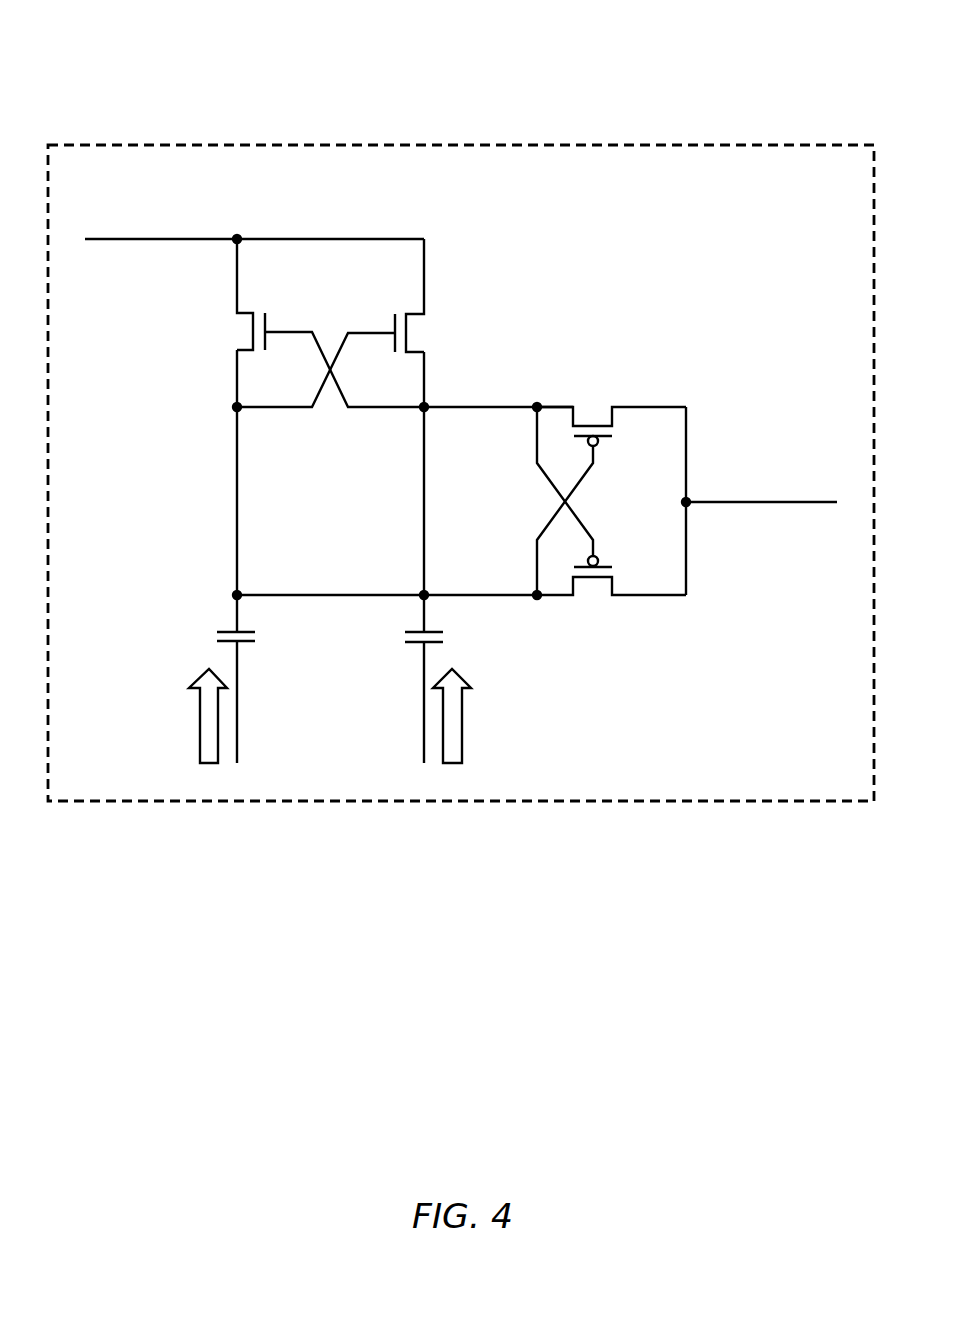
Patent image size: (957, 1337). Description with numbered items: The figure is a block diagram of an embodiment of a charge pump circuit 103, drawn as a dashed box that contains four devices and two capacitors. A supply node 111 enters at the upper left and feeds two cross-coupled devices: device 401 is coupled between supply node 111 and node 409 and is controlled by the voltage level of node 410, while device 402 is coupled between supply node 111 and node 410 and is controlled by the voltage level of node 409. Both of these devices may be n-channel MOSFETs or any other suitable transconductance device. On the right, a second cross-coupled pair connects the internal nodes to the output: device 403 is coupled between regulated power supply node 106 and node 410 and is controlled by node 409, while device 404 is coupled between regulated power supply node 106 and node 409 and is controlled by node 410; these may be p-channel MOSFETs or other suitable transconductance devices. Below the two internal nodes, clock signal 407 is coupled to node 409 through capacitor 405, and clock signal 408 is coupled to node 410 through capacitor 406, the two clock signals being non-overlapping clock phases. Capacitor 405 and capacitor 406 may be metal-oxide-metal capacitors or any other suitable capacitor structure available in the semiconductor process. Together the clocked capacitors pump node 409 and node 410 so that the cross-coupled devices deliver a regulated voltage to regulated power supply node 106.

The charge pump circuit 103 is at (538, 145).
The supply node 111 is at (254, 239).
The regulated power supply node 106 is at (760, 471).
The device 401 is at (246, 330).
The device 402 is at (410, 338).
The device 403 is at (593, 415).
The device 404 is at (592, 590).
The capacitor 405 is at (218, 629).
The capacitor 406 is at (443, 632).
The clock signal 407 is at (200, 729).
The clock signal 408 is at (462, 726).
The node 409 is at (238, 455).
The node 410 is at (424, 538).